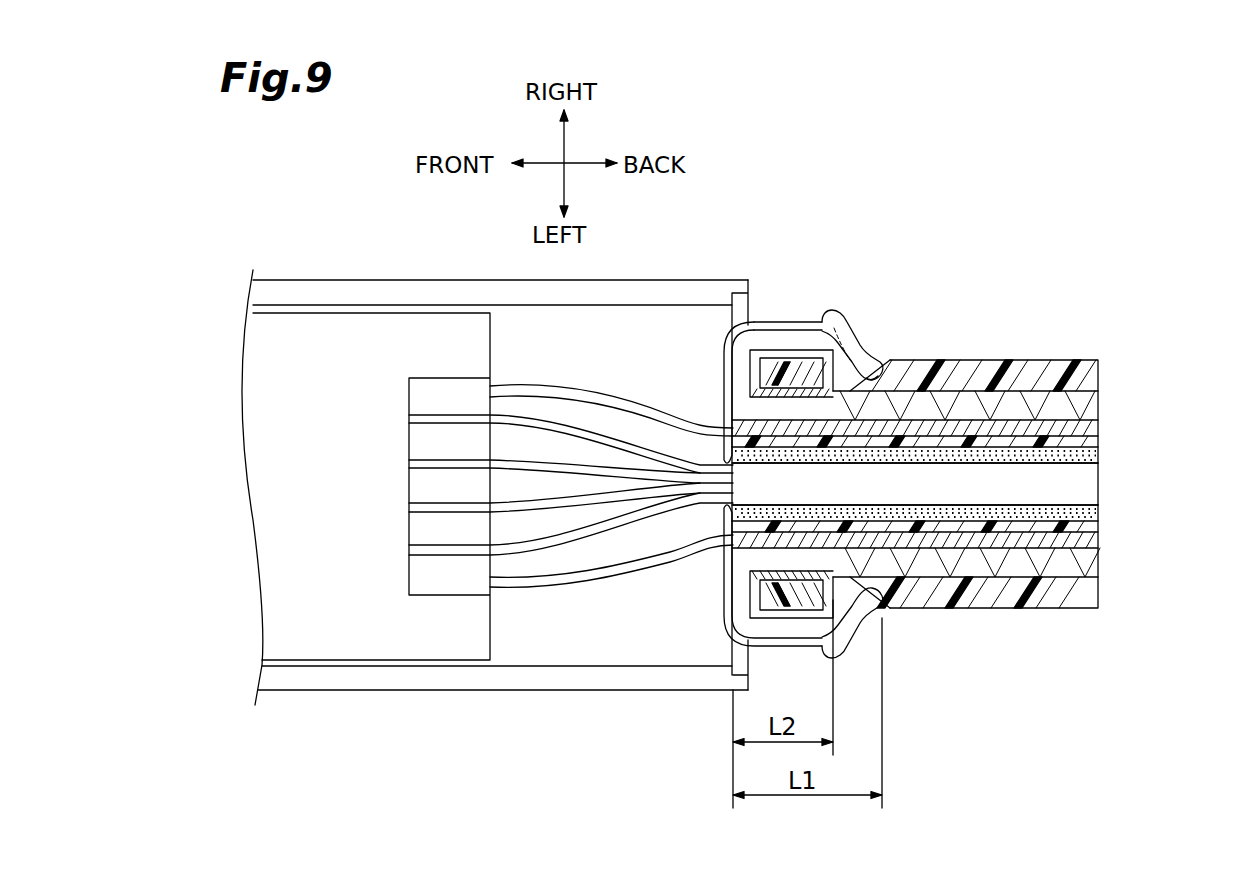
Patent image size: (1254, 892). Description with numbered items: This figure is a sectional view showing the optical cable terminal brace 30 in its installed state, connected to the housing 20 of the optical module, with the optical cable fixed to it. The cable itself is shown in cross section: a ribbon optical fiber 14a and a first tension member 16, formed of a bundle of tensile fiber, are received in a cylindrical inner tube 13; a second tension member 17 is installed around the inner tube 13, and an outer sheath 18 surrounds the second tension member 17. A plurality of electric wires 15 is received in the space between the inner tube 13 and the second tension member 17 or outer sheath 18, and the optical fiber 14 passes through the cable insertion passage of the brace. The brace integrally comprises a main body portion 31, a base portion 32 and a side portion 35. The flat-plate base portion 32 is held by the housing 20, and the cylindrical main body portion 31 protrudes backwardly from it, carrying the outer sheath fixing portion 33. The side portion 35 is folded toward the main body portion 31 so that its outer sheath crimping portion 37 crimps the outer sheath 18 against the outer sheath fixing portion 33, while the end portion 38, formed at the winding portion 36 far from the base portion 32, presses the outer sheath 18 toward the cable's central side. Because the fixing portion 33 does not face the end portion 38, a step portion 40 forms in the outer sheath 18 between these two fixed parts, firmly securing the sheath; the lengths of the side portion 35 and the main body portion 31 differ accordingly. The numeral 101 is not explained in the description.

The inner tube 13 is at (1093, 442).
The optical fiber 14 is at (600, 473).
The ribbon optical fiber 14a is at (1087, 482).
The electric wires 15 is at (1087, 428).
The first tension member 16 is at (1087, 459).
The second tension member 17 is at (1087, 405).
The outer sheath 18 is at (1087, 377).
The housing 20 is at (483, 292).
The optical cable terminal brace 30 is at (836, 214).
The main body portion 31 is at (893, 603).
The base portion 32 is at (740, 305).
The outer sheath fixing portion 33 is at (790, 410).
The side portion 35 is at (724, 350).
The winding portion 36 is at (850, 326).
The outer sheath crimping portion 37 is at (791, 338).
The end portion 38 is at (882, 362).
The step portion 40 is at (866, 390).
The circuit board 101 is at (350, 640).